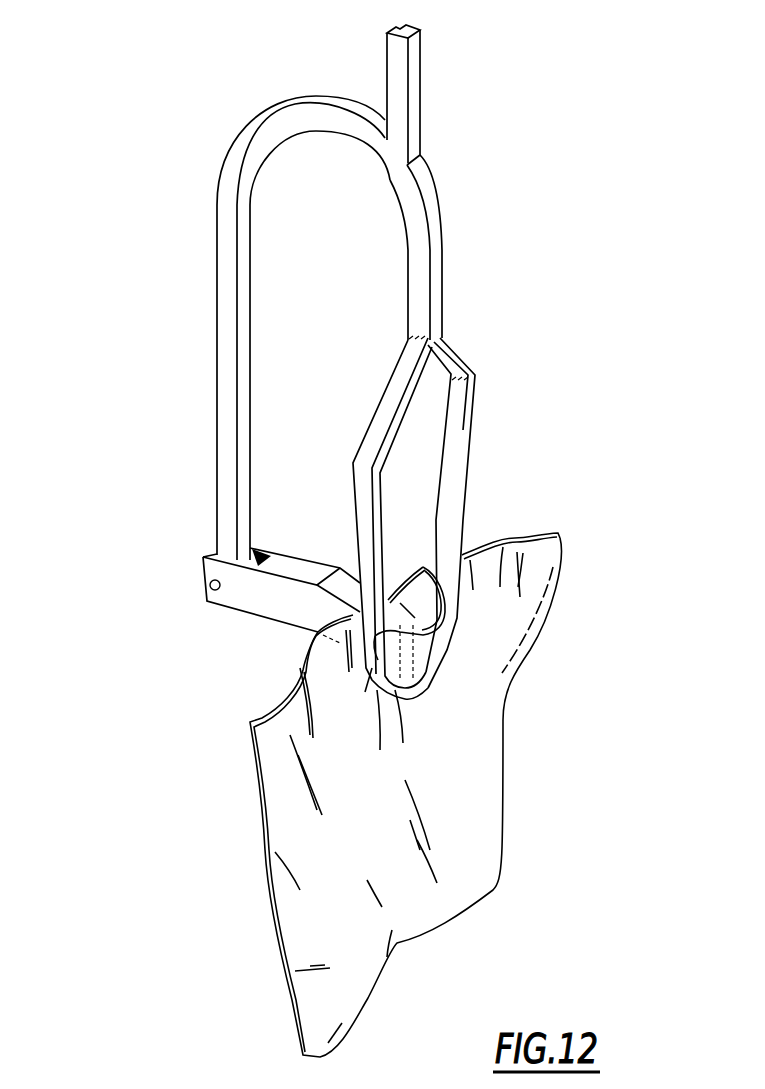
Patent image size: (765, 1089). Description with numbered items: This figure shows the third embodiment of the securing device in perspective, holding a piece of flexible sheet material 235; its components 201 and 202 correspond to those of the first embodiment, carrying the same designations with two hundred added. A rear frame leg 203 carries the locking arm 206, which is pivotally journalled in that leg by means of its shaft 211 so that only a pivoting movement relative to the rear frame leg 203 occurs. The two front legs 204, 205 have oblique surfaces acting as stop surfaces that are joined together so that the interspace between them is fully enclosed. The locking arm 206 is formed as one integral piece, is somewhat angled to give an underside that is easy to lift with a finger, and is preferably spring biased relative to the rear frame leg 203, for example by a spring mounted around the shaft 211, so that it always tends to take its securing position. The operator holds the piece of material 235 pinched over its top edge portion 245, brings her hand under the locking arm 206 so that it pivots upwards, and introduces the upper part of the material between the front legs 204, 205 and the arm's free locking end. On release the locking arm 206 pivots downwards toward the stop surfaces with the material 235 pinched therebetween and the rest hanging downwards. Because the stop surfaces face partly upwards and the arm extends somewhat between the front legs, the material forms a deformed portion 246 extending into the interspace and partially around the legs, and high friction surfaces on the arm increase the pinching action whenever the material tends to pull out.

The handle frame 201 is at (194, 304).
The arched portion of handle 202 is at (204, 218).
The rear frame leg 203 is at (232, 378).
The front leg 204 is at (367, 500).
The front leg 205 is at (460, 398).
The locking arm 206 is at (275, 595).
The shaft 211 is at (212, 590).
The piece of flexible sheet material 235 is at (283, 856).
The top edge portion 245 is at (515, 535).
The deformed portion 246 is at (425, 648).